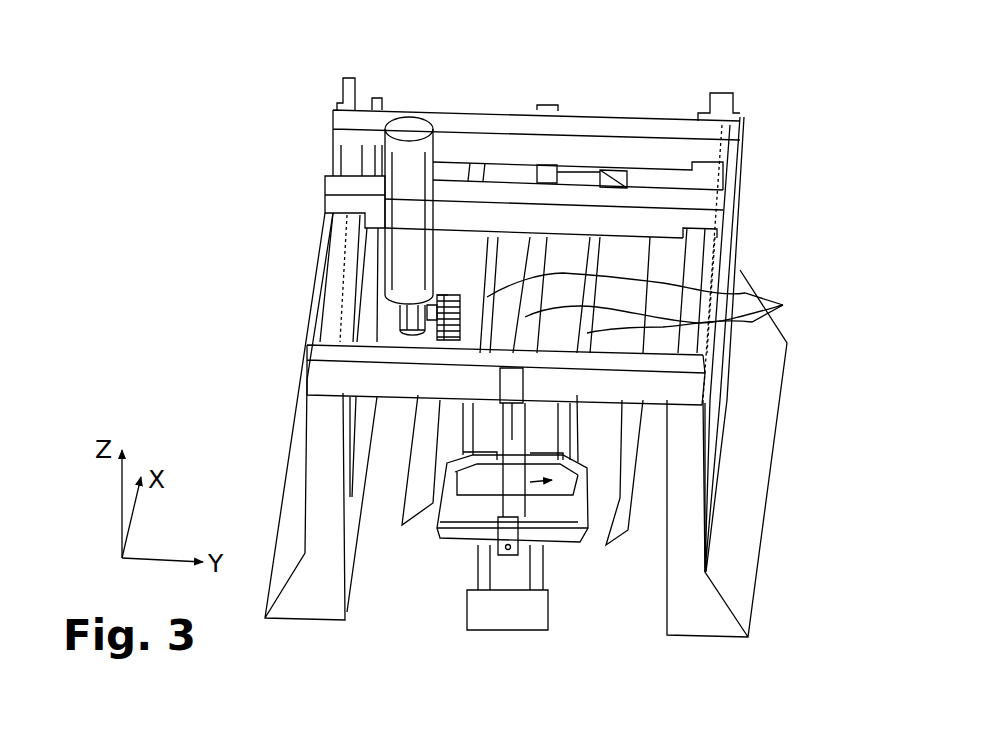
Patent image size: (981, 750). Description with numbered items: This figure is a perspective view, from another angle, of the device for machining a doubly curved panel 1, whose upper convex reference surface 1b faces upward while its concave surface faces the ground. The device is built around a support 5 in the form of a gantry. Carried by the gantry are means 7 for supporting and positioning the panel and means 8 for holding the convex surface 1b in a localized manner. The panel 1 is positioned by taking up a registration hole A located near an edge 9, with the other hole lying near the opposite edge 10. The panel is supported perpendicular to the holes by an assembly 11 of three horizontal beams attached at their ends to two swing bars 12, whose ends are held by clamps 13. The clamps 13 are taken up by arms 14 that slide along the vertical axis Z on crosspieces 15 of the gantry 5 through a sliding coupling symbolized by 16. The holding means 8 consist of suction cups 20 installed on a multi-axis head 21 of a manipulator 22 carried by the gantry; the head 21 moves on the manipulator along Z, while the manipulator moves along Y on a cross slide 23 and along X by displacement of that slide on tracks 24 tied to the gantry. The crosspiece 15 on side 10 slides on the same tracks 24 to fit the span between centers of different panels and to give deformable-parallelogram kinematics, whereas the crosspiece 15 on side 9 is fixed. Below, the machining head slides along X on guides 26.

The panel 1 is at (411, 530).
The convex surface 1b is at (620, 500).
The support 5 is at (748, 173).
The means for supporting and positioning the panel 7 is at (453, 553).
The means for holding the upper convex surface 8 is at (455, 289).
The edge of the panel 9 is at (605, 540).
The opposite edge 10 is at (697, 267).
The assembly of three horizontal beams 11 is at (770, 300).
The swing bars 12 is at (497, 428).
The clamps 13 is at (563, 538).
The arms 14 is at (510, 425).
The crosspieces 15 is at (464, 120).
The sliding coupling 16 is at (548, 106).
The suction cups 20 is at (447, 283).
The multi-axis head 21 is at (398, 323).
The manipulator 22 is at (412, 123).
The cross slide 23 is at (357, 185).
The tracks 24 is at (342, 237).
The guides 26 is at (502, 657).
The registration hole A is at (587, 472).